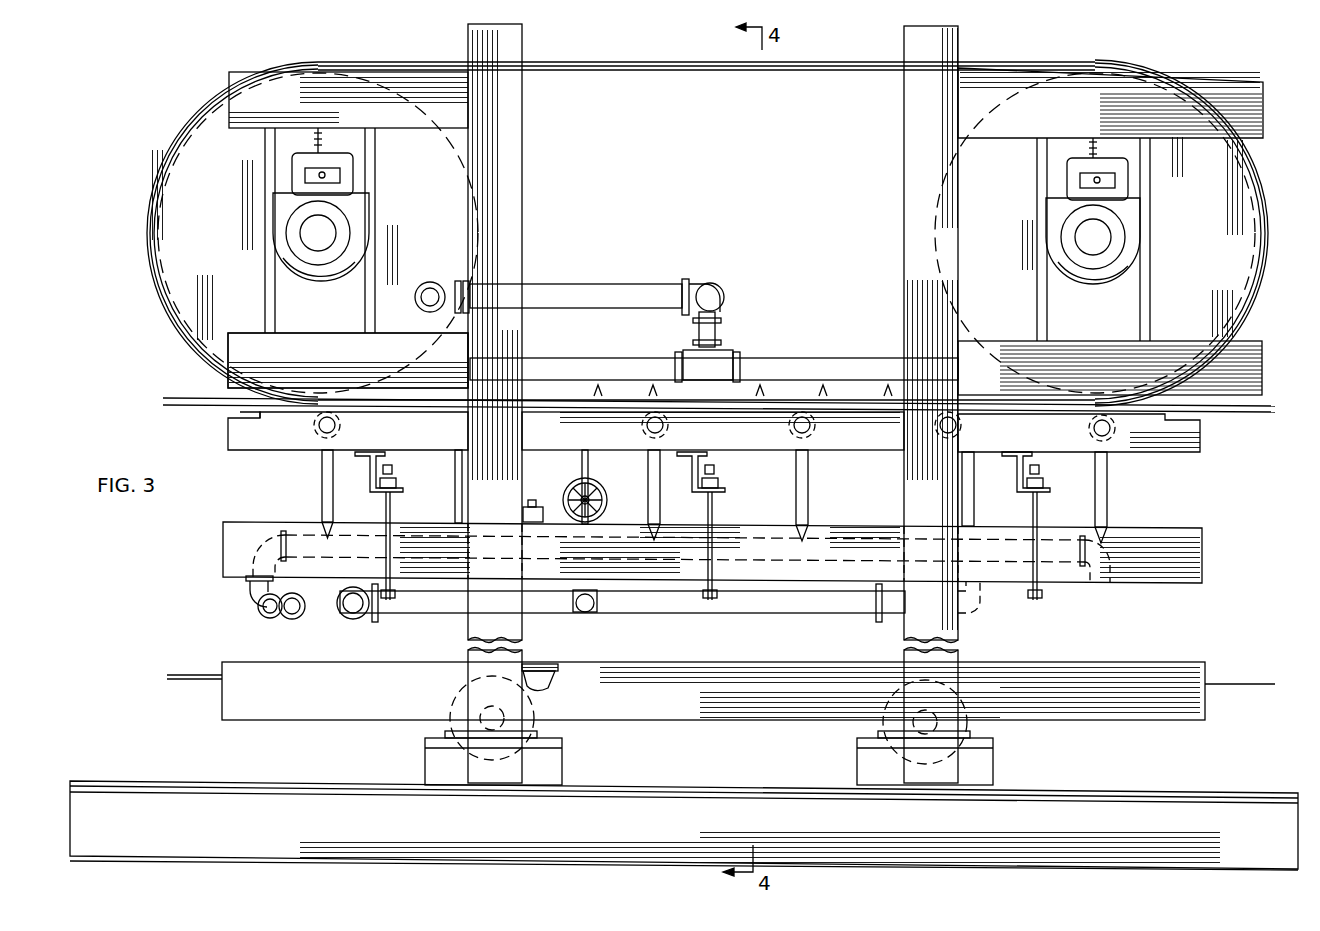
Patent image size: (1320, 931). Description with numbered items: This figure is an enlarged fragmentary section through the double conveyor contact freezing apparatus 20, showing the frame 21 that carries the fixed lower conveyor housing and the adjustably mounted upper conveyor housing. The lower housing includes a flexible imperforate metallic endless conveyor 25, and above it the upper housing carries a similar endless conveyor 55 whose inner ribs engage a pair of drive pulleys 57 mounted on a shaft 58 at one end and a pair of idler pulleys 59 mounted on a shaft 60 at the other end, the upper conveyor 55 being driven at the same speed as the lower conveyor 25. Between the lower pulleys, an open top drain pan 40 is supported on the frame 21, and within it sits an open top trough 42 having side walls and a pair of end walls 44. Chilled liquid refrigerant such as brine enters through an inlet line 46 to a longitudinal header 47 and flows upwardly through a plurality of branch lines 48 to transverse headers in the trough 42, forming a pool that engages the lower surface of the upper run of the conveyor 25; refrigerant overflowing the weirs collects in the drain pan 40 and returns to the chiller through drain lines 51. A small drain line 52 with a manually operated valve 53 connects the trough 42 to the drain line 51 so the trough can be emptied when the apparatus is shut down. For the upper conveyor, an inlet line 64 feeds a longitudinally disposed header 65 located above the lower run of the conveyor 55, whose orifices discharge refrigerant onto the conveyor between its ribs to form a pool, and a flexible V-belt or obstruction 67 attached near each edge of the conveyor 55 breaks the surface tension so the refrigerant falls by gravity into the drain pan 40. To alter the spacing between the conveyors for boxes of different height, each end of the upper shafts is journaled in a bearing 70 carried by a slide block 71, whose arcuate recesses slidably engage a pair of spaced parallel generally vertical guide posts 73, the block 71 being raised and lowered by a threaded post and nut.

The double conveyor contact freezing apparatus 20 is at (168, 340).
The frame 21 is at (520, 152).
The endless conveyor 25 is at (1262, 412).
The drain pan 40 is at (280, 452).
The open top trough 42 is at (745, 414).
The end walls 44 is at (1155, 428).
The inlet line 46 is at (262, 612).
The longitudinal header 47 is at (850, 538).
The branch lines 48 is at (322, 472).
The drain lines 51 is at (456, 470).
The small drain line 52 is at (582, 470).
The manually operated valve 53 is at (603, 495).
The endless conveyor 55 is at (680, 70).
The drive pulleys 57 is at (1237, 210).
The shaft 58 is at (1105, 232).
The idler pulleys 59 is at (183, 248).
The shaft 60 is at (328, 236).
The inlet line 64 is at (585, 285).
The header 65 is at (835, 358).
The flexible obstruction 67 is at (630, 62).
The bearing 70 is at (343, 218).
The slide block 71 is at (328, 276).
The guide posts 73 is at (365, 307).